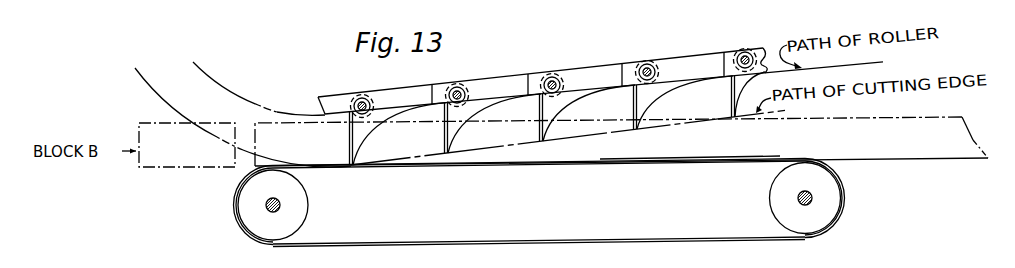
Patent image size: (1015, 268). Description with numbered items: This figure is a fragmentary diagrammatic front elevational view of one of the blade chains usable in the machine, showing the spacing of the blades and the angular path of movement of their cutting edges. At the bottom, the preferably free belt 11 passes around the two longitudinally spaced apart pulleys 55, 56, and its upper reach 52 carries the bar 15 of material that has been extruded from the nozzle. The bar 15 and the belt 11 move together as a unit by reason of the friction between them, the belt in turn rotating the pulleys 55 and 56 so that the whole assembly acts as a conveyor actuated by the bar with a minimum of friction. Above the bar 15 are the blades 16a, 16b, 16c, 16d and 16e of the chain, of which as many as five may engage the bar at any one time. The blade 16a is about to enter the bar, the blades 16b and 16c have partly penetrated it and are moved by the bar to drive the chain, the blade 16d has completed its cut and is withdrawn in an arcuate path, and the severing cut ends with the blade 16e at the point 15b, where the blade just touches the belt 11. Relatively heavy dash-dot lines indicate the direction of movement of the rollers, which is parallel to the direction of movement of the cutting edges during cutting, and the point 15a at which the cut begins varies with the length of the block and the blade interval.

The belt 11 is at (500, 238).
The bar 15 is at (908, 152).
The point of beginning of the cut 15a is at (735, 117).
The point of ending of the cut 15b is at (355, 166).
The blade 16a is at (732, 98).
The blade 16b is at (633, 106).
The blade 16c is at (540, 135).
The blade 16d is at (446, 138).
The blade 16e is at (349, 142).
The upper reach 52 is at (588, 159).
The pulley 55 is at (277, 232).
The pulley 56 is at (809, 228).